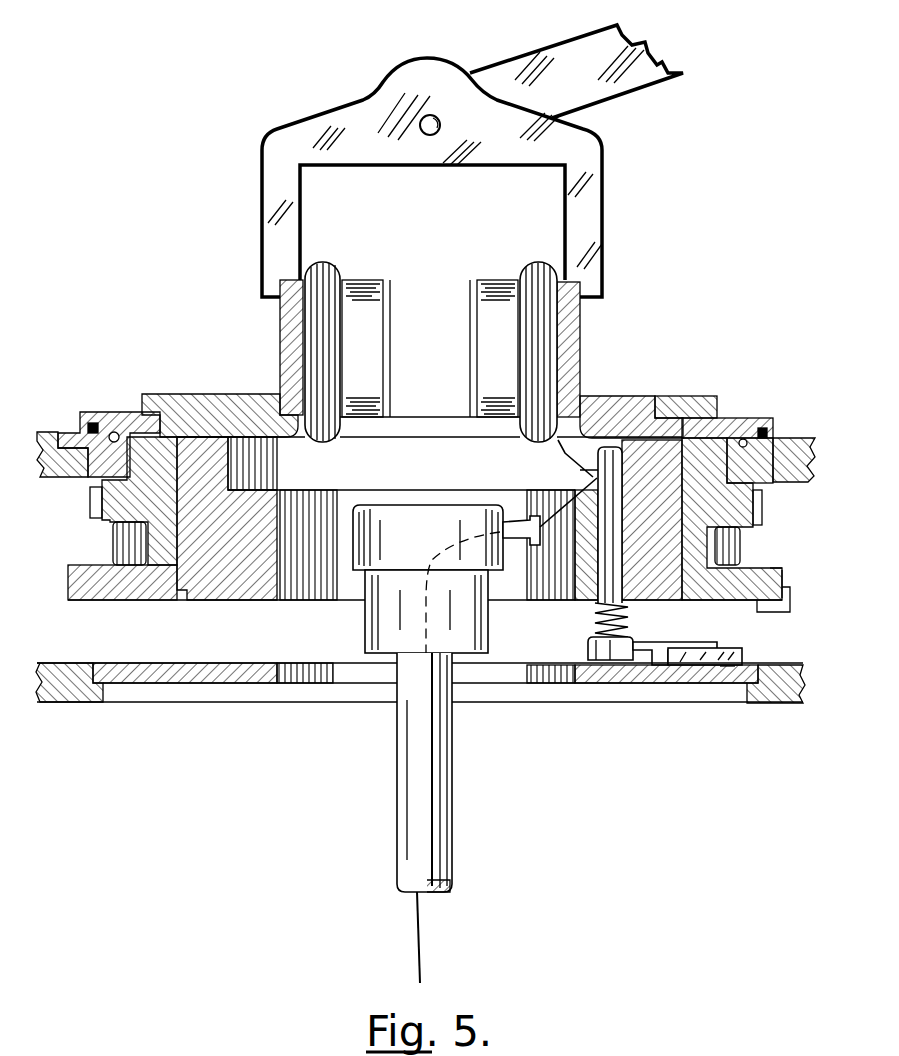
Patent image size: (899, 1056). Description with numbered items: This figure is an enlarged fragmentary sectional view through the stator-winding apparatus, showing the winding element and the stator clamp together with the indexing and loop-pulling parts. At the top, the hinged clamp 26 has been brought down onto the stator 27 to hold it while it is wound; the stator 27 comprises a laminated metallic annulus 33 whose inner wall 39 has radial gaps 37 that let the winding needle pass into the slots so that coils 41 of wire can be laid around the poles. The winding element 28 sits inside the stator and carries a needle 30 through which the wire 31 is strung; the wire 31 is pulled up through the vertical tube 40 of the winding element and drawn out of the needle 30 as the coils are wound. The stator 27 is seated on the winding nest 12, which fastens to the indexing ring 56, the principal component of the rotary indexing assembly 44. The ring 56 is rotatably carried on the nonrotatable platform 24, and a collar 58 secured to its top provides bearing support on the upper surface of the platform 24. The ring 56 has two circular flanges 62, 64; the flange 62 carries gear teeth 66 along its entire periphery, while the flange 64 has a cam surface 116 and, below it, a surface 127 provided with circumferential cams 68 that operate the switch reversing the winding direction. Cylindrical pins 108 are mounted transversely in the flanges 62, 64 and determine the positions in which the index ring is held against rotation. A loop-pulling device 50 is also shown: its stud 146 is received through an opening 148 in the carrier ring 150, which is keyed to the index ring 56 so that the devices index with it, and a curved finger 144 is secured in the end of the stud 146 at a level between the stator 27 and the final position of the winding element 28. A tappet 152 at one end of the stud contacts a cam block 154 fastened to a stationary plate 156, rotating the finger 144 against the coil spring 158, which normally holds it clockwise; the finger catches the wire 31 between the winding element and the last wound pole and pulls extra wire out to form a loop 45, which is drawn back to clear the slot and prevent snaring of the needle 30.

The winding nest 12 is at (205, 394).
The nonrotatable platform 24 is at (808, 437).
The hinged clamp 26 is at (598, 197).
The stator 27 is at (578, 340).
The winding element 28 is at (405, 505).
The needle 30 is at (516, 522).
The wire 31 is at (556, 497).
The laminated metallic annulus 33 is at (280, 327).
The radial gaps 37 is at (386, 305).
The inner wall 39 is at (437, 295).
The vertical tube 40 is at (440, 783).
The coils 41 is at (322, 262).
The rotary indexing assembly 44 is at (155, 592).
The loop 45 is at (577, 457).
The loop-pulling device 50 is at (637, 642).
The indexing ring 56 is at (727, 600).
The collar 58 is at (731, 417).
The circular flange 62 is at (118, 510).
The circular flange 64 is at (110, 592).
The gear teeth 66 is at (763, 505).
The cams 68 is at (793, 605).
The cylindrical pins 108 is at (750, 543).
The cam surface 116 is at (785, 561).
The surface 127 is at (797, 587).
The curved finger 144 is at (590, 403).
The stud 146 is at (593, 613).
The opening 148 is at (582, 603).
The carrier ring 150 is at (656, 402).
The tappet 152 is at (657, 683).
The cam block 154 is at (717, 683).
The stationary plate 156 is at (727, 668).
The coil spring 158 is at (588, 638).